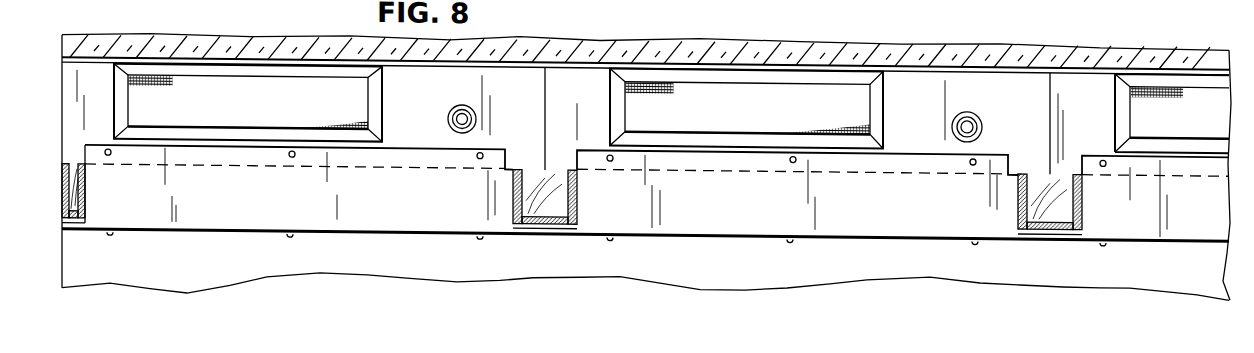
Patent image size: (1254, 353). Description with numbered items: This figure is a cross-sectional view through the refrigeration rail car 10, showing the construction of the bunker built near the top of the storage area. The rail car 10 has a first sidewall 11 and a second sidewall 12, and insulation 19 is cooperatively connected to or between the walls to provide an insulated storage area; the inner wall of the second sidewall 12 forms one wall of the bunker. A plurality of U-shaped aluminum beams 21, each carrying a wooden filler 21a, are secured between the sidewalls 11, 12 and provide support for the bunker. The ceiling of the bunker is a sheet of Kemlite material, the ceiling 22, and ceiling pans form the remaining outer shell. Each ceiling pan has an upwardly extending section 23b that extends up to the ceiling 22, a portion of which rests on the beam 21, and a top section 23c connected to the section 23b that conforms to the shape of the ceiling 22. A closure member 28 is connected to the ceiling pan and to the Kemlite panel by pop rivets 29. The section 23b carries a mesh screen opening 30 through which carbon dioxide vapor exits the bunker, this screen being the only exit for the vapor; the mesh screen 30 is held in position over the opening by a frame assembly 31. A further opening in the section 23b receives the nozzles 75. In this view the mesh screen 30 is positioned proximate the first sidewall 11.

The refrigeration rail car 10 is at (645, 3).
The first sidewall 11 is at (857, 0).
The second sidewall 12 is at (376, 279).
The insulation 19 is at (645, 35).
The U-shaped aluminum beam 21 is at (1020, 199).
The wooden filler 21a is at (86, 182).
The ceiling 22 is at (577, 62).
The upwardly extending section 23b is at (953, 75).
The top section 23c is at (473, 63).
The closure member 28 is at (315, 225).
The pop rivets 29 is at (113, 235).
The mesh screen opening 30 is at (340, 106).
The frame assembly 31 is at (372, 120).
The nozzles 75 is at (470, 112).